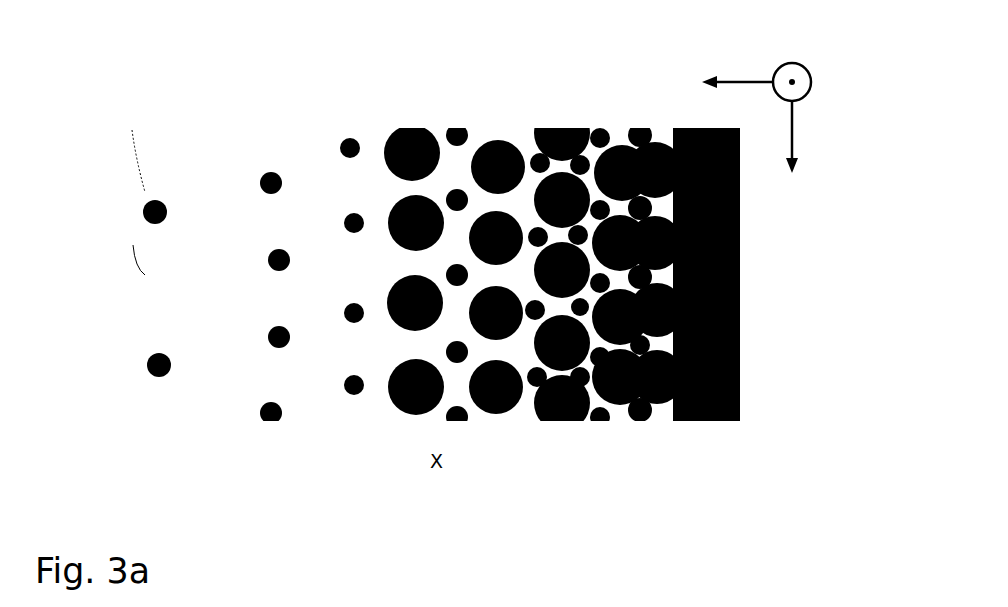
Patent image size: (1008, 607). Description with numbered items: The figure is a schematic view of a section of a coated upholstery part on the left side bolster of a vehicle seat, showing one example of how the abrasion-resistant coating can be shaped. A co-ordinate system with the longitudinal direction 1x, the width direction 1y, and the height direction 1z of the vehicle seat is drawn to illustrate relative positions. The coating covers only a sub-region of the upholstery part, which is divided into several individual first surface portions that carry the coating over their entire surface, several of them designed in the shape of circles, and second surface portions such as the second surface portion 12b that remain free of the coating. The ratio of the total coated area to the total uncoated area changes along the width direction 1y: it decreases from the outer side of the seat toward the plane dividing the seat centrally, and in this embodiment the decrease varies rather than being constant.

The longitudinal direction 1x is at (795, 135).
The width direction 1y is at (743, 82).
The height direction 1z is at (812, 80).
The second surface portion 12b is at (673, 347).